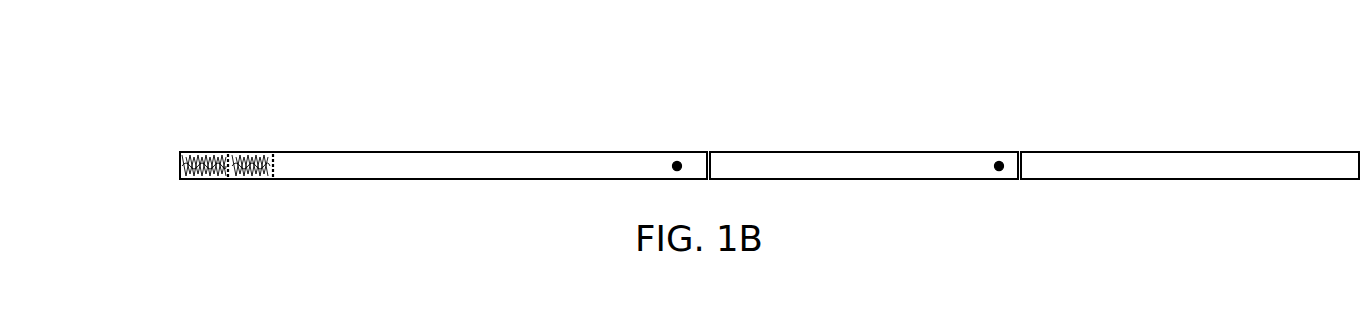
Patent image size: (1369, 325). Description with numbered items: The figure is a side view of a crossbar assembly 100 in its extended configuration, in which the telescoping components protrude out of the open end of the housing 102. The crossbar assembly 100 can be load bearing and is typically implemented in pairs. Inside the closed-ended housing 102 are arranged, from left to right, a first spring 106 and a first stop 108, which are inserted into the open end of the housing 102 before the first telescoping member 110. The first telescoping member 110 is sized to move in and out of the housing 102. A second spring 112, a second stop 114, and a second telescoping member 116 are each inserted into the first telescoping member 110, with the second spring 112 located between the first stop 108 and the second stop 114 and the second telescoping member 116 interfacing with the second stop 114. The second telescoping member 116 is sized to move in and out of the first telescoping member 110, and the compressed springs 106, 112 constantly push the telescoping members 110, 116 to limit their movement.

The crossbar assembly 100 is at (549, 70).
The housing 102 is at (438, 152).
The first spring 106 is at (202, 158).
The first stop 108 is at (232, 179).
The first telescoping member 110 is at (867, 152).
The second spring 112 is at (247, 158).
The second stop 114 is at (276, 179).
The second telescoping member 116 is at (1162, 152).